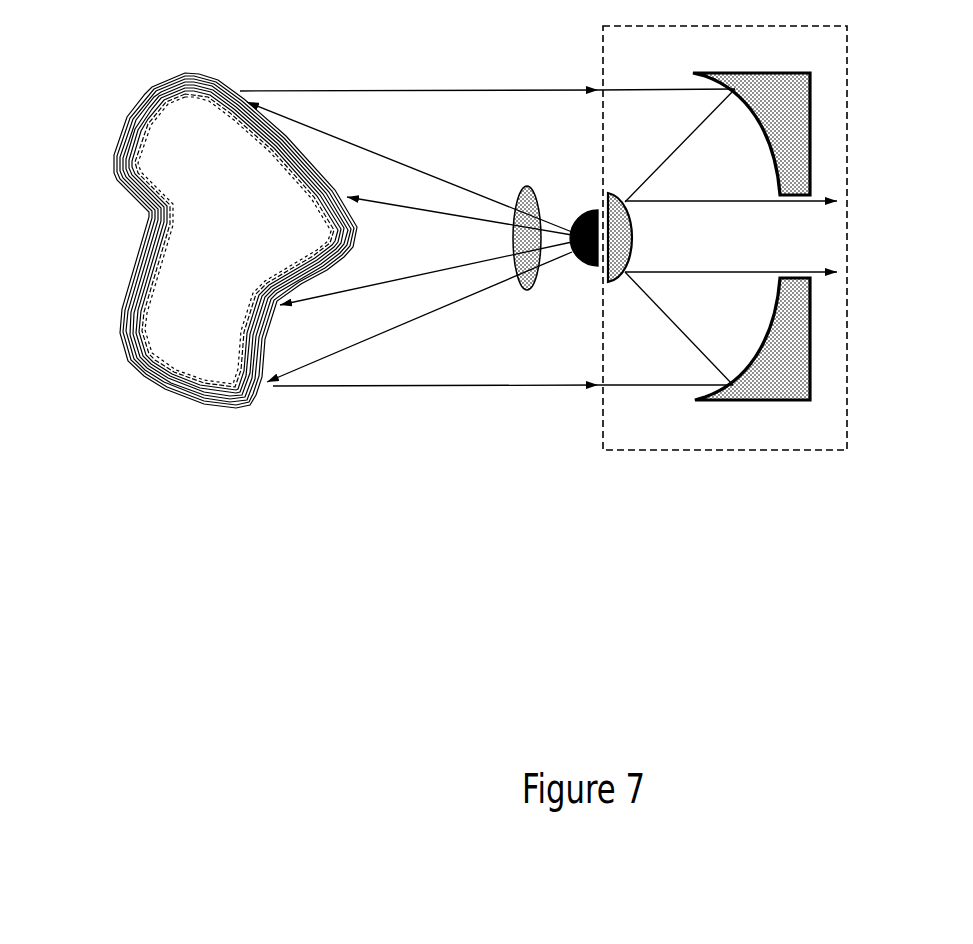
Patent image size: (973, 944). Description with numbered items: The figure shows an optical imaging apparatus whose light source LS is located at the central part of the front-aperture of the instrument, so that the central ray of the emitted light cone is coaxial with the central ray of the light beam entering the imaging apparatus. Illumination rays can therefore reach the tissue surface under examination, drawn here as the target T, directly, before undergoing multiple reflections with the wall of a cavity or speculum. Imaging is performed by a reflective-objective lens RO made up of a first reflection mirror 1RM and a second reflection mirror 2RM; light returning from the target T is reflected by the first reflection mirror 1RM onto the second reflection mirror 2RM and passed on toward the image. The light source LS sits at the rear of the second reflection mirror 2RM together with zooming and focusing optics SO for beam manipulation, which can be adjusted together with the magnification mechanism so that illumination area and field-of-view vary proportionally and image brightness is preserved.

The target object T is at (205, 403).
The light beam manipulation optics SO is at (530, 275).
The light source LS is at (588, 262).
The reflective-objective lens RO is at (850, 390).
The first reflection mirror 1RM is at (797, 98).
The second reflection mirror 2RM is at (617, 258).